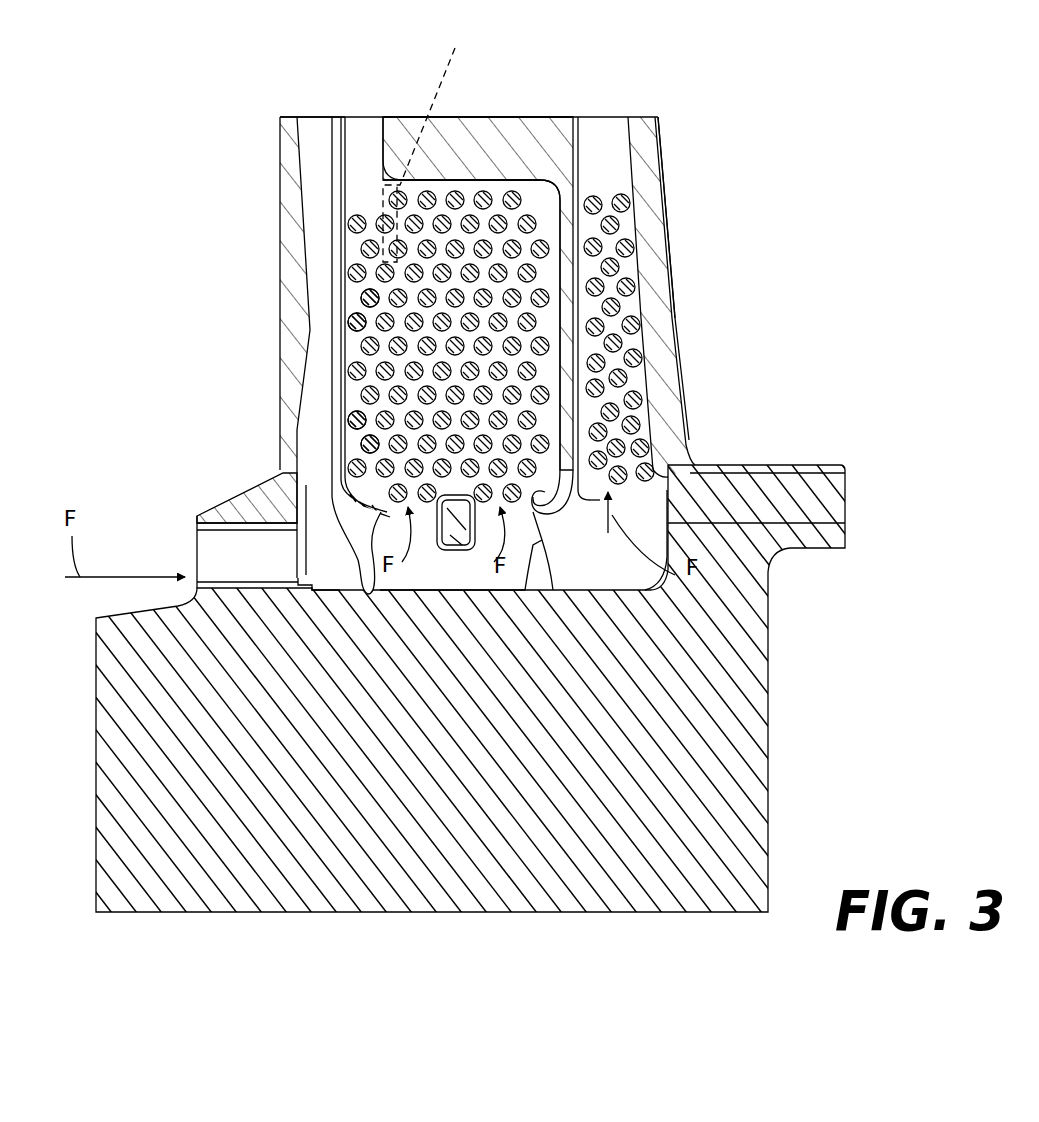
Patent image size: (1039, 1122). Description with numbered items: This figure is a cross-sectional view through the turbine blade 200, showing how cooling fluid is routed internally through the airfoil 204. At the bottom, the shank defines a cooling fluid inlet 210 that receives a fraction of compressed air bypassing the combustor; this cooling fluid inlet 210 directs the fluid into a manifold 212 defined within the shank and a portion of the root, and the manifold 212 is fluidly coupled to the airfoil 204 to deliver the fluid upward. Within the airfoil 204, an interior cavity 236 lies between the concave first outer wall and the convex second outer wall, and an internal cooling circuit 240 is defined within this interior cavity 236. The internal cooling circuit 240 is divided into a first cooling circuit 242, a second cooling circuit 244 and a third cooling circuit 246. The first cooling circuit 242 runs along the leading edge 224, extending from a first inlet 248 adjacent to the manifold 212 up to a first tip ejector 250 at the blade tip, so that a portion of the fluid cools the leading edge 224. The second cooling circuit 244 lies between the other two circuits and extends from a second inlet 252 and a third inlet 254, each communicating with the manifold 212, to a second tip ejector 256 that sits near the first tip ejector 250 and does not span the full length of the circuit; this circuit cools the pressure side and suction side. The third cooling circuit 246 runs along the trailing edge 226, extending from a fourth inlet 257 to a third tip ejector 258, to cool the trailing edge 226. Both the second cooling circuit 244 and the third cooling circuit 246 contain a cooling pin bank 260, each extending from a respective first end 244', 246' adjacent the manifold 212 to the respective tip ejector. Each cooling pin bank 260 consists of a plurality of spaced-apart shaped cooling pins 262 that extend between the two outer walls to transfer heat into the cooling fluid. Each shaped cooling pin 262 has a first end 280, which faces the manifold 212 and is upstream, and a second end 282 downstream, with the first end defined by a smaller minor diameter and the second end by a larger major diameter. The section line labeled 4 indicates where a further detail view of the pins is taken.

The turbine blade 200 is at (862, 96).
The airfoil 204 is at (688, 235).
The cooling fluid inlet 210 is at (210, 540).
The manifold 212 is at (323, 567).
The leading edge 224 is at (280, 150).
The trailing edge 226 is at (675, 282).
The interior cavity 236 is at (658, 204).
The internal cooling circuit 240 is at (475, 150).
The first cooling circuit 242 is at (318, 105).
The second cooling circuit 244 is at (452, 308).
The first end of the second cooling circuit 244' is at (306, 497).
The third cooling circuit 246 is at (566, 265).
The first end of the third cooling circuit 246' is at (669, 450).
The first inlet 248 is at (308, 517).
The first tip ejector 250 is at (289, 116).
The second inlet 252 is at (292, 470).
The third inlet 254 is at (510, 515).
The second tip ejector 256 is at (337, 116).
The fourth inlet 257 is at (655, 497).
The third tip ejector 258 is at (612, 116).
The cooling pin bank 260 is at (608, 180).
The shaped cooling pins 262 is at (420, 116).
The first end of the cooling pin 280 is at (367, 313).
The second end of the cooling pin 282 is at (367, 288).
The section line 4 is at (422, 141).